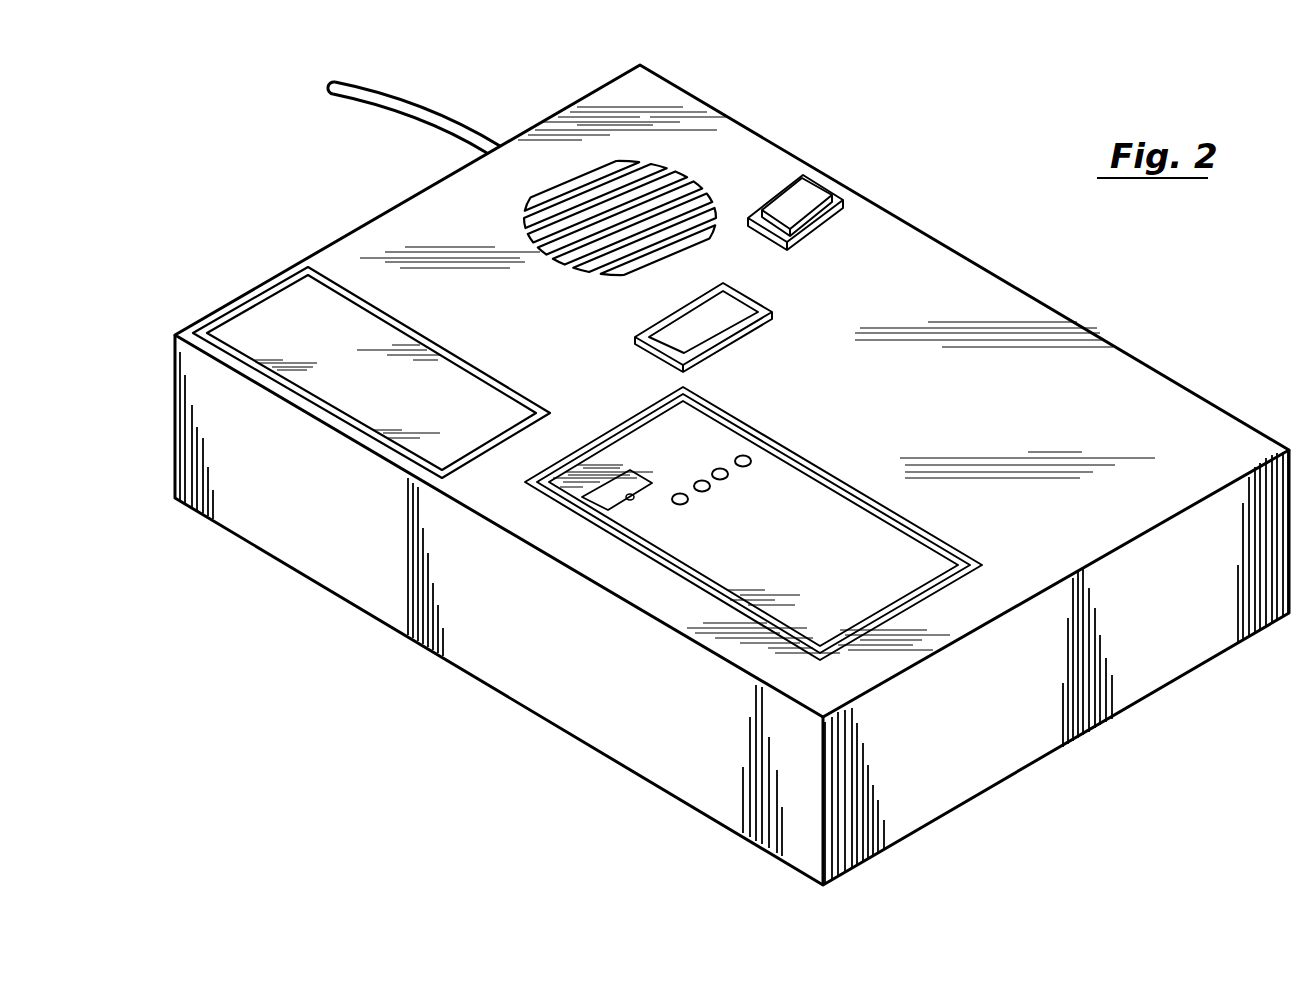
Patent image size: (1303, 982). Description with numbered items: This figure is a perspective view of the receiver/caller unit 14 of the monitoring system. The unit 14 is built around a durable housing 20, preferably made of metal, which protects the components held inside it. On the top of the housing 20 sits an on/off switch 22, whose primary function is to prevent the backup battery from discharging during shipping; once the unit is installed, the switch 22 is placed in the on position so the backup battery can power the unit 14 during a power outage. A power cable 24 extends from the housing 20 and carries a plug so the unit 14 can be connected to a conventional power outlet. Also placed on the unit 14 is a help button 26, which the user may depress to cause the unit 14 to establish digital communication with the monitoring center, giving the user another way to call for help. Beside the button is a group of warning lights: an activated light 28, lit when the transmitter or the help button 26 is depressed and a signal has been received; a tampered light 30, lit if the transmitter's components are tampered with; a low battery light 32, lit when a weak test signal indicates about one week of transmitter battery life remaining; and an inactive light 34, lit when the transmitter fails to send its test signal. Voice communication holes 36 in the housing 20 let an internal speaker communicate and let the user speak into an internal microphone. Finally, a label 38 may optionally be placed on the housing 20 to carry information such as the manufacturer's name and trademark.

The receiver/caller unit 14 is at (804, 134).
The housing 20 is at (1113, 395).
The on/off switch 22 is at (805, 218).
The power cable 24 is at (403, 98).
The help button 26 is at (720, 330).
The activated light 28 is at (748, 455).
The tampered light 30 is at (719, 468).
The low battery light 32 is at (698, 480).
The inactive light 34 is at (672, 502).
The voice communication holes 36 is at (535, 244).
The label 38 is at (467, 403).